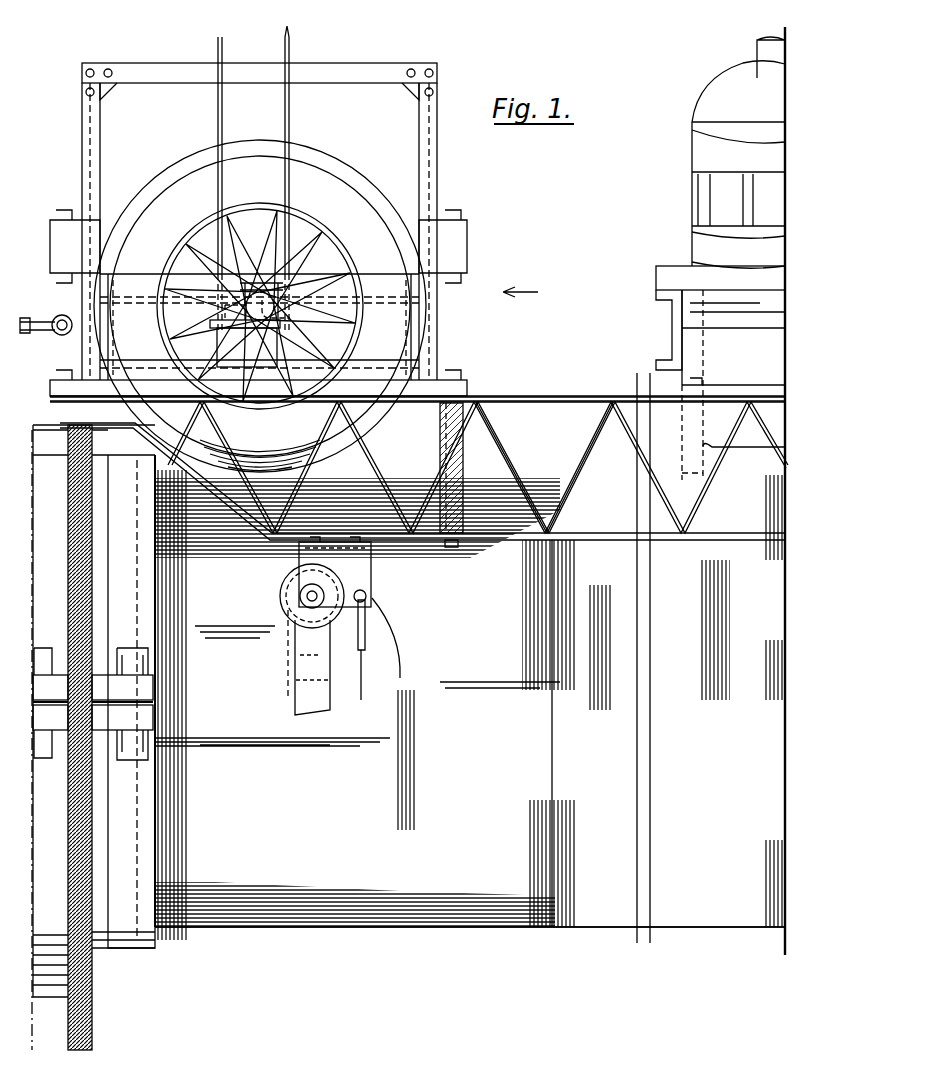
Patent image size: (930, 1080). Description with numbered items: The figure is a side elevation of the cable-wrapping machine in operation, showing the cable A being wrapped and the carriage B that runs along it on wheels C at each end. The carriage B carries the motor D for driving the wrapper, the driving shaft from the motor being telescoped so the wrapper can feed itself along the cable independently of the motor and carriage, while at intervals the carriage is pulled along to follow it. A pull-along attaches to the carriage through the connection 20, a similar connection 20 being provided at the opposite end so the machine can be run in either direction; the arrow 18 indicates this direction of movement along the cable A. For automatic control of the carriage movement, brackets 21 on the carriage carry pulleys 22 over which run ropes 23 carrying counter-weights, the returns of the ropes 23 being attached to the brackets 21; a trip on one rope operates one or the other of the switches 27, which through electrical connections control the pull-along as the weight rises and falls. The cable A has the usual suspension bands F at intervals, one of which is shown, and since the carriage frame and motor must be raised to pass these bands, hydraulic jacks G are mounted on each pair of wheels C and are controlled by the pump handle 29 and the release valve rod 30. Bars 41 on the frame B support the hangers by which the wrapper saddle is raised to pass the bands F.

The release valve rod 30 is at (218, 50).
The pump handle 29 is at (290, 55).
The wheels C is at (333, 178).
The hydraulic jacks G is at (262, 340).
The connection 20 is at (58, 335).
The direction arrow 18 is at (523, 283).
The carriage B is at (571, 395).
The bars 41 is at (583, 452).
The motor D is at (714, 104).
The cable A is at (472, 875).
The suspension bands F is at (130, 948).
The brackets 21 is at (355, 570).
The pulleys 22 is at (284, 598).
The switches 27 is at (316, 656).
The ropes 23 is at (363, 672).